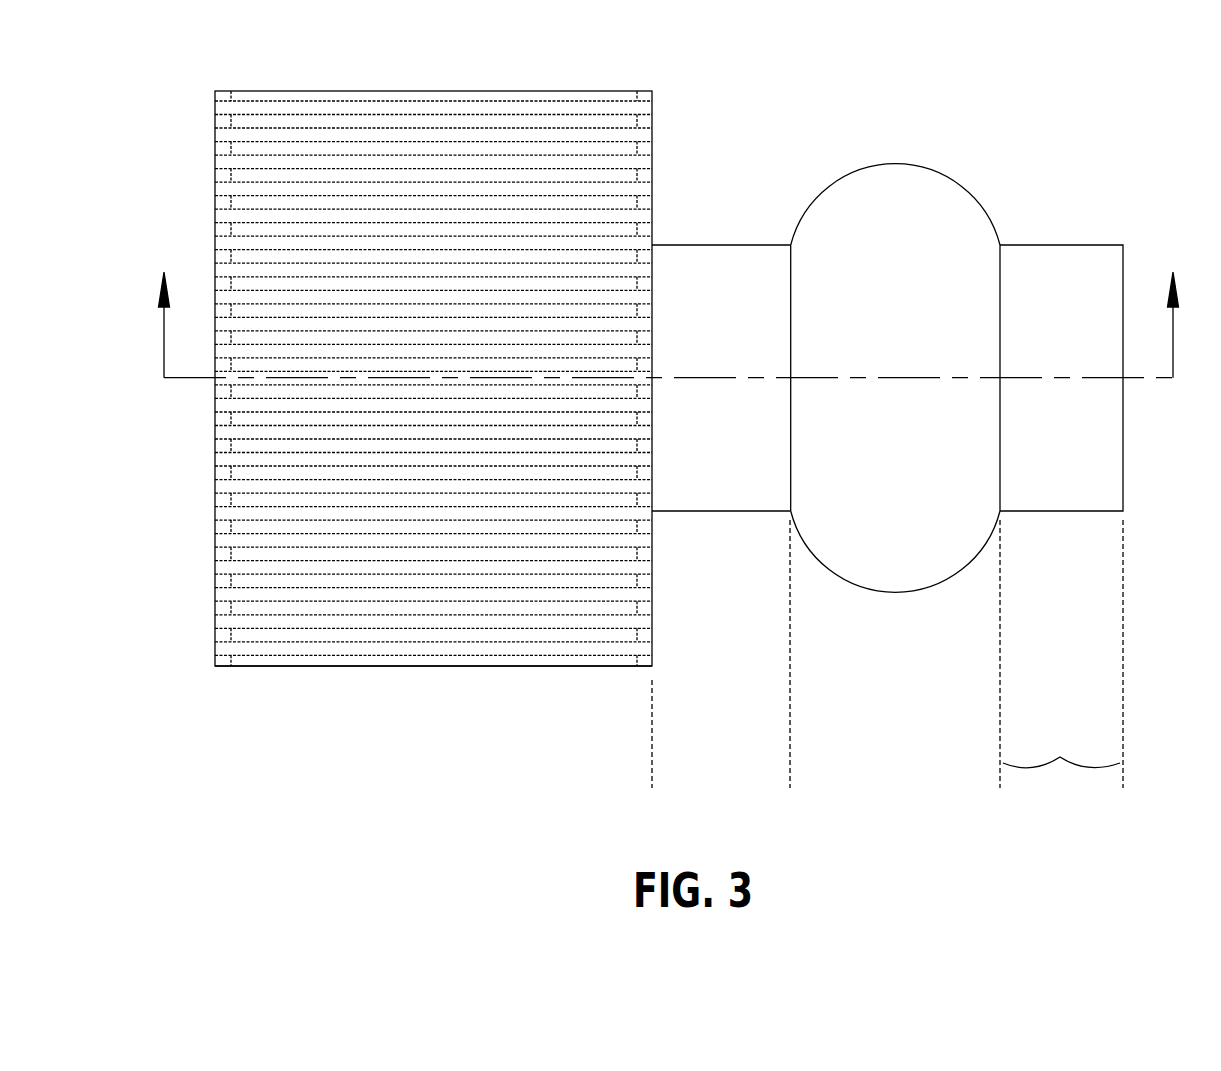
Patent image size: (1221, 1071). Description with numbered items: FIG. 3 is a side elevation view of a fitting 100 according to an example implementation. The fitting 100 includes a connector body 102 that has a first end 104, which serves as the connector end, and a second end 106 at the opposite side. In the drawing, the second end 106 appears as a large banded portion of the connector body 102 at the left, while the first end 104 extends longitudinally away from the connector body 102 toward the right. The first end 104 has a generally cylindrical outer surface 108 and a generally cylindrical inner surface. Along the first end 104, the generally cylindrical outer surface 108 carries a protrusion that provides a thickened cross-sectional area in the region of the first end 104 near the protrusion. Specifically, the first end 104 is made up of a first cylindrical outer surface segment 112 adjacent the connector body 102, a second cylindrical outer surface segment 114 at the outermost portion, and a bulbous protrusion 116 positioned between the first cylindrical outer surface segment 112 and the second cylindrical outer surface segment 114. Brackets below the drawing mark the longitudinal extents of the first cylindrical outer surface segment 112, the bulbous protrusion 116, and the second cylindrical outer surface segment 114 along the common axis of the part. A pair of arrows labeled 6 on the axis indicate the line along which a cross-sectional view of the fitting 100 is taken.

The fitting 100 is at (921, 63).
The connector body 102 is at (433, 91).
The first end 104 is at (1062, 245).
The second end 106 is at (268, 667).
The generally cylindrical outer surface 108 is at (680, 245).
The first cylindrical outer surface segment 112 is at (788, 763).
The second cylindrical outer surface segment 114 is at (1061, 782).
The bulbous protrusion 116 is at (793, 763).
The section line 6- 6 is at (669, 307).